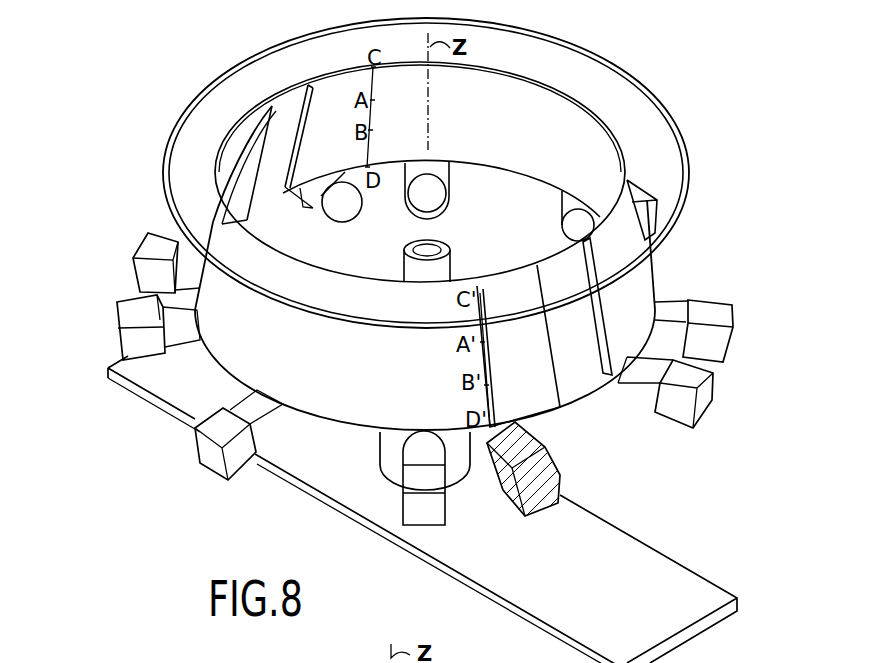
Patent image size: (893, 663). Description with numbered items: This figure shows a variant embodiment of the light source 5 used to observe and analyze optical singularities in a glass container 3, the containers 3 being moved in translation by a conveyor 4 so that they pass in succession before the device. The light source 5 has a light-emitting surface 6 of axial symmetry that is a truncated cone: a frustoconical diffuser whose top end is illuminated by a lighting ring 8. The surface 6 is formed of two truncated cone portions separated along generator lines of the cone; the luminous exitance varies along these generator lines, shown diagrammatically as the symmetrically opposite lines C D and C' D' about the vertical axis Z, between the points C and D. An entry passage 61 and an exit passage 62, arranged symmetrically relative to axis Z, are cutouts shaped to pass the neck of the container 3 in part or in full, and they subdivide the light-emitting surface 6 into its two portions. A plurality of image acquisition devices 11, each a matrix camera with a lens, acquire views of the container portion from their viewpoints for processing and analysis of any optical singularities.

The glass container 3 is at (387, 458).
The conveyor 4 is at (688, 584).
The light source 5 is at (641, 74).
The light-emitting surface of axial symmetry 6 is at (237, 354).
The entry passage 61 is at (265, 147).
The exit passage 62 is at (603, 372).
The lighting ring 8 is at (232, 100).
The image acquisition device 11 is at (123, 313).